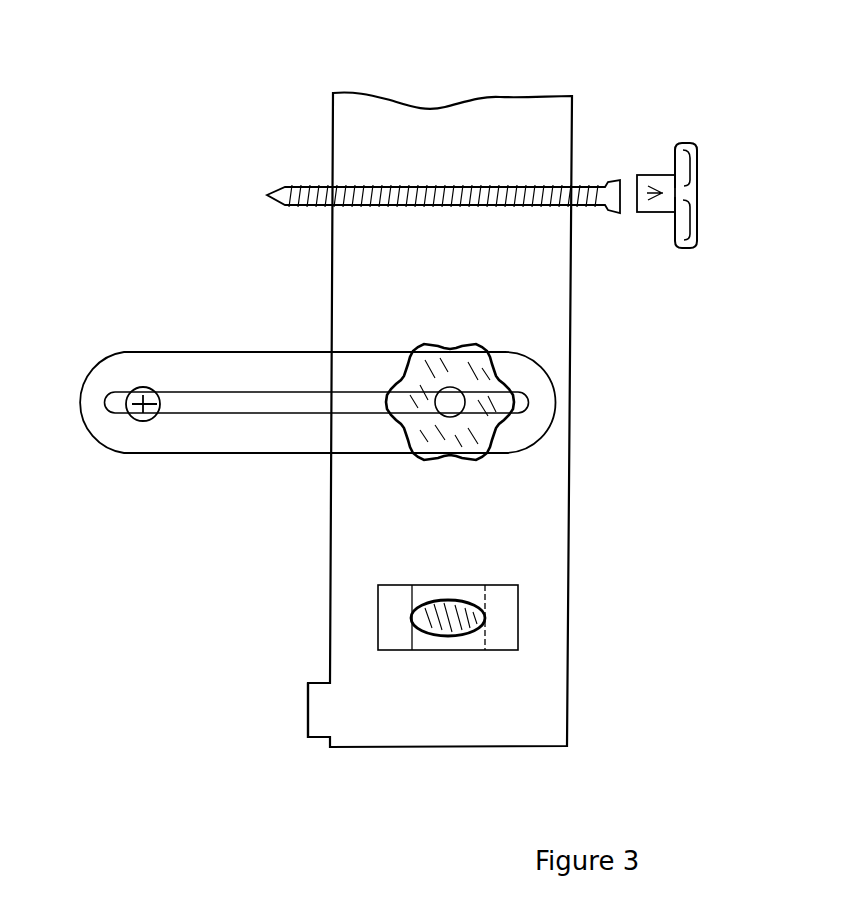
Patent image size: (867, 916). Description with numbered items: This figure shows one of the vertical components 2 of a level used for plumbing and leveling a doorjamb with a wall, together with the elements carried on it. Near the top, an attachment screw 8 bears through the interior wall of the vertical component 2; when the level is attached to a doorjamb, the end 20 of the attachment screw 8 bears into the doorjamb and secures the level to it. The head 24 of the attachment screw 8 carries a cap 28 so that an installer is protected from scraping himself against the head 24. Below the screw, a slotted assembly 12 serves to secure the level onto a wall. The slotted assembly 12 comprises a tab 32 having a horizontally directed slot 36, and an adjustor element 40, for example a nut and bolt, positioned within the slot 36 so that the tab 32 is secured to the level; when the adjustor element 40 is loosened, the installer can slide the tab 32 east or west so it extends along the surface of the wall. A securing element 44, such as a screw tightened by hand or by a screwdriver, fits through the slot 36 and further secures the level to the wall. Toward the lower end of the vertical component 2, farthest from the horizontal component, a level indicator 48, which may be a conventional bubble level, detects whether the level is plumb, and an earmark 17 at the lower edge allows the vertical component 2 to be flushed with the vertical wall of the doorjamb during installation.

The vertical component 2 is at (535, 120).
The end of attachment screw 20 is at (290, 188).
The head of attachment screw 24 is at (608, 182).
The cap 28 is at (683, 158).
The attachment screw 8 is at (598, 200).
The tab 32 is at (225, 370).
The slot 36 is at (187, 403).
The securing element 44 is at (128, 404).
The adjustor element 40 is at (420, 372).
The slotted assembly 12 is at (550, 443).
The level indicator 48 is at (485, 622).
The earmark 17 is at (317, 704).